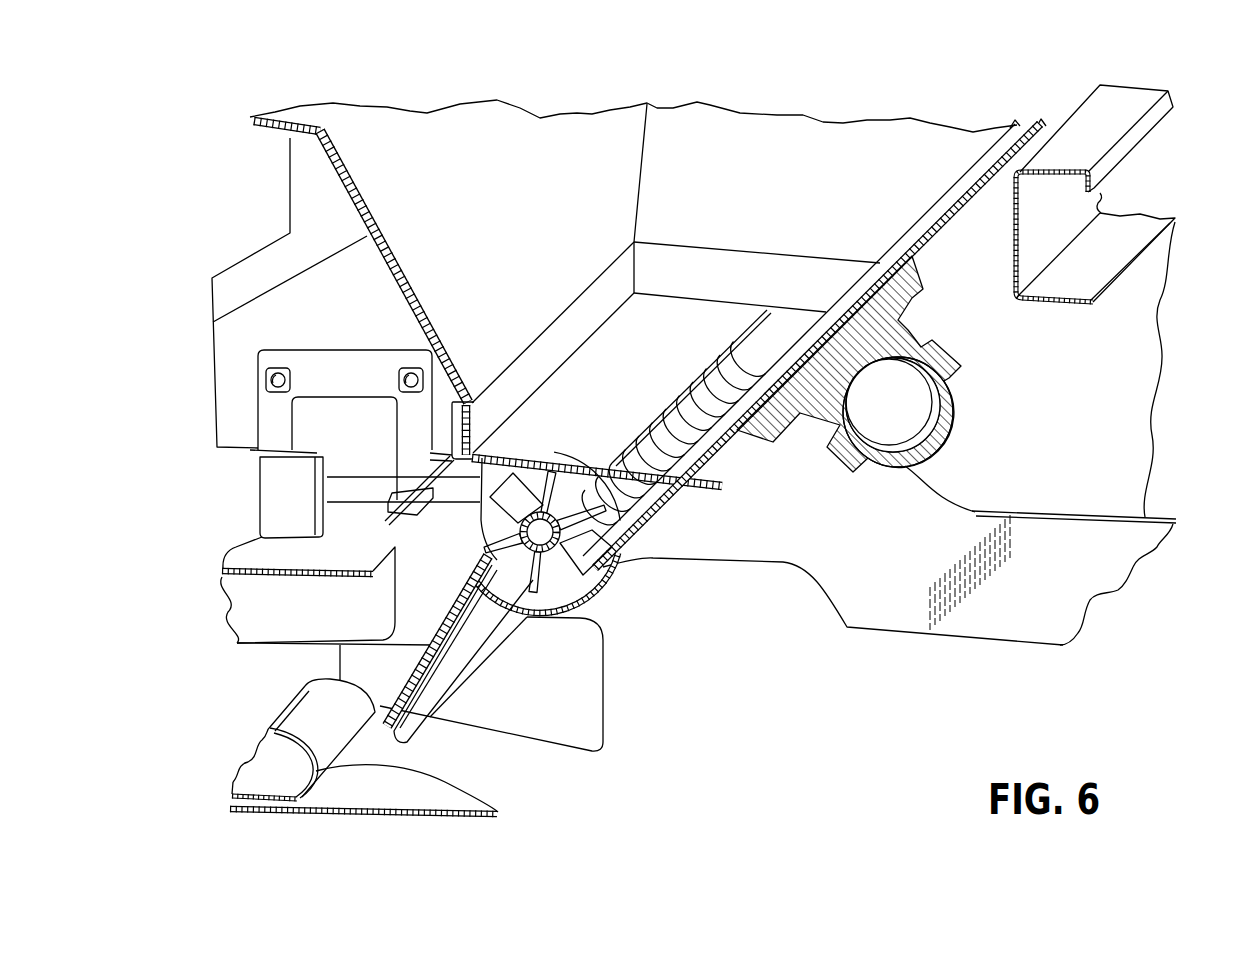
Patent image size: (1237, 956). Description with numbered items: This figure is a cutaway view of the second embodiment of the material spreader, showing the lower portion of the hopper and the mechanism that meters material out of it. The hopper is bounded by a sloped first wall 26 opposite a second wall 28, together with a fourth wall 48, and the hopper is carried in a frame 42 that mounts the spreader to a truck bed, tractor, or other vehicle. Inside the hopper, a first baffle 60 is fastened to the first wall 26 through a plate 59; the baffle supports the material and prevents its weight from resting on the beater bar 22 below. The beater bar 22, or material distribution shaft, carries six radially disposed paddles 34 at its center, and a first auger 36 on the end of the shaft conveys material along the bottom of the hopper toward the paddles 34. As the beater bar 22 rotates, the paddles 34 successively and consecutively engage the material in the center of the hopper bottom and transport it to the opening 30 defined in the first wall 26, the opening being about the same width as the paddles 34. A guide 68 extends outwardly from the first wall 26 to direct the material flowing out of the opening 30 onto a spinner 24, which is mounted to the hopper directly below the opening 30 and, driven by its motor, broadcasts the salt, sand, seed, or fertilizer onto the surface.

The beater bar 22 is at (560, 613).
The spinner 24 is at (473, 800).
The first wall 26 is at (352, 204).
The second wall 28 is at (928, 257).
The opening 30 is at (490, 570).
The paddles 34 is at (597, 557).
The first auger 36 is at (663, 495).
The frame 42 is at (1000, 632).
The fourth wall 48 is at (886, 148).
The plate 59 is at (863, 290).
The first baffle 60 is at (720, 310).
The guide 68 is at (430, 477).